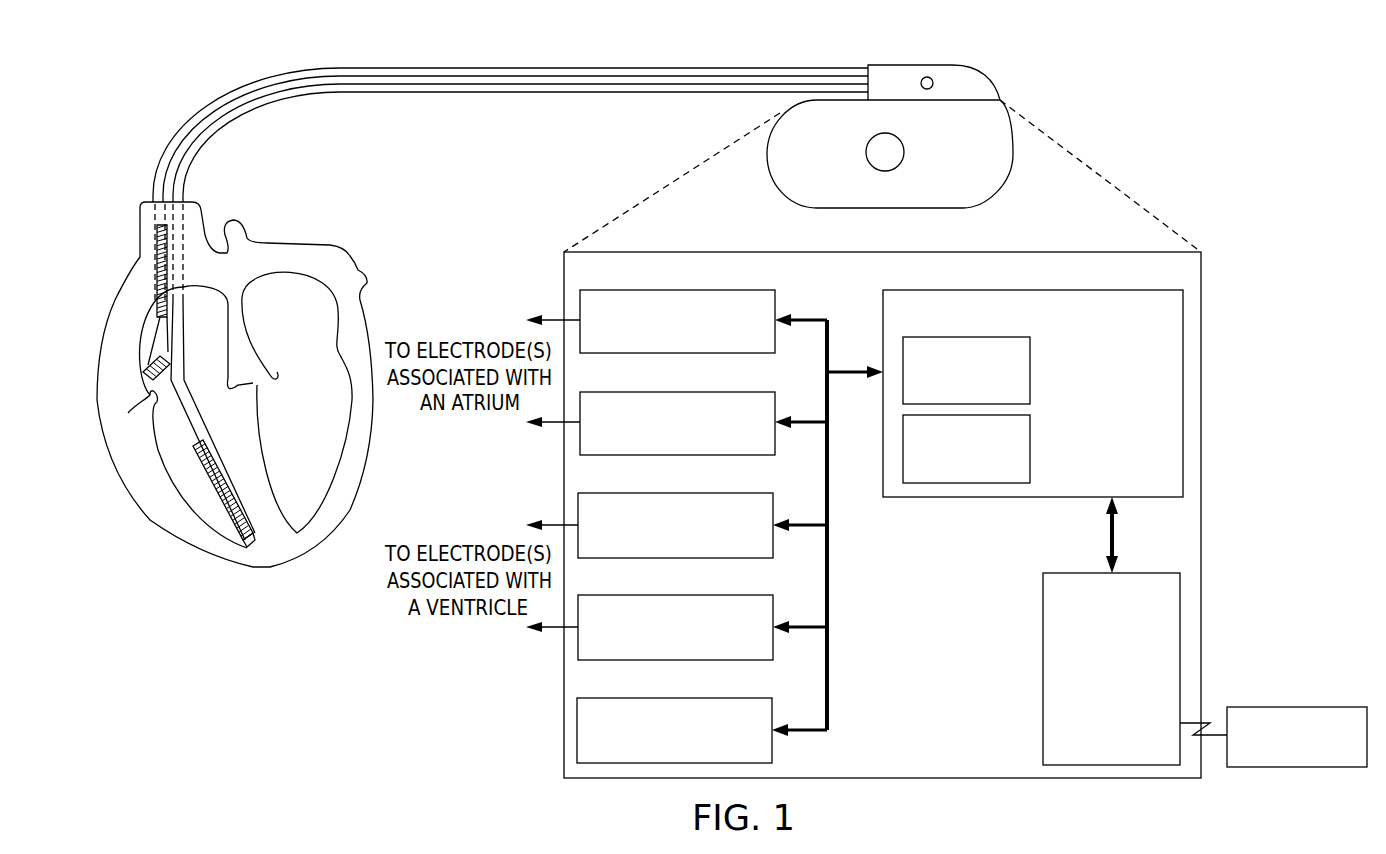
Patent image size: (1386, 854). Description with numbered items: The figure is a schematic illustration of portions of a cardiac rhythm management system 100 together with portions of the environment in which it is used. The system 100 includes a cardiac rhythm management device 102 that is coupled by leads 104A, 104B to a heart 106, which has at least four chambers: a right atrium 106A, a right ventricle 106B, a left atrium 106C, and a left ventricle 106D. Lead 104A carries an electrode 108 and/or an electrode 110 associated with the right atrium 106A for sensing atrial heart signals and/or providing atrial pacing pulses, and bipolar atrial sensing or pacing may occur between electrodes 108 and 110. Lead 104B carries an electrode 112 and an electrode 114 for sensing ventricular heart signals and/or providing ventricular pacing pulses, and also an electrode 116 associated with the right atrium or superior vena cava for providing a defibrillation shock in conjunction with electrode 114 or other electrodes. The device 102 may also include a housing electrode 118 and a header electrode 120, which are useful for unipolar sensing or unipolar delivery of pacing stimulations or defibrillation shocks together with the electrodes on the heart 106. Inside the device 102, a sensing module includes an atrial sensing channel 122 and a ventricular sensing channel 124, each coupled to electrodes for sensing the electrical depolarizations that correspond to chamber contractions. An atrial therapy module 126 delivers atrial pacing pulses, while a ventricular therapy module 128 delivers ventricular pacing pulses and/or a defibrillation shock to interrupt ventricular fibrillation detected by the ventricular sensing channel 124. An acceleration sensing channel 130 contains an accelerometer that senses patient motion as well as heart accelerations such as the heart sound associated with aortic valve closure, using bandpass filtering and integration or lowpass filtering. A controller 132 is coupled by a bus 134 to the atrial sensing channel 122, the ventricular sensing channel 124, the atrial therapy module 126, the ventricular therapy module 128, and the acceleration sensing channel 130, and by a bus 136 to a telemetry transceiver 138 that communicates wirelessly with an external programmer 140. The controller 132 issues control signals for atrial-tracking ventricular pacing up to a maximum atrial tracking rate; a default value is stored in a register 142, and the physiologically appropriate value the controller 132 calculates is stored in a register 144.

The cardiac rhythm management system 100 is at (360, 698).
The cardiac rhythm management device 102 is at (1003, 183).
The lead 104A is at (362, 93).
The lead 104B is at (331, 68).
The heart 106 is at (215, 555).
The right atrium 106A is at (150, 337).
The right ventricle 106B is at (165, 430).
The left atrium 106C is at (315, 327).
The left ventricle 106D is at (325, 433).
The electrode 108 is at (128, 413).
The electrode 110 is at (160, 360).
The electrode 112 is at (247, 540).
The electrode 114 is at (207, 477).
The electrode 116 is at (157, 248).
The housing electrode 118 is at (904, 150).
The header electrode 120 is at (931, 77).
The atrial sensing channel 122 is at (677, 288).
The ventricular sensing channel 124 is at (677, 491).
The atrial therapy module 126 is at (677, 390).
The ventricular therapy module 128 is at (677, 593).
The acceleration sensing channel 130 is at (677, 696).
The controller 132 is at (1032, 289).
The bus 134 is at (830, 577).
The bus 136 is at (1108, 535).
The telemetry transceiver 138 is at (1043, 668).
The external programmer 140 is at (1297, 706).
The register 142 is at (1032, 370).
The register 144 is at (1032, 450).